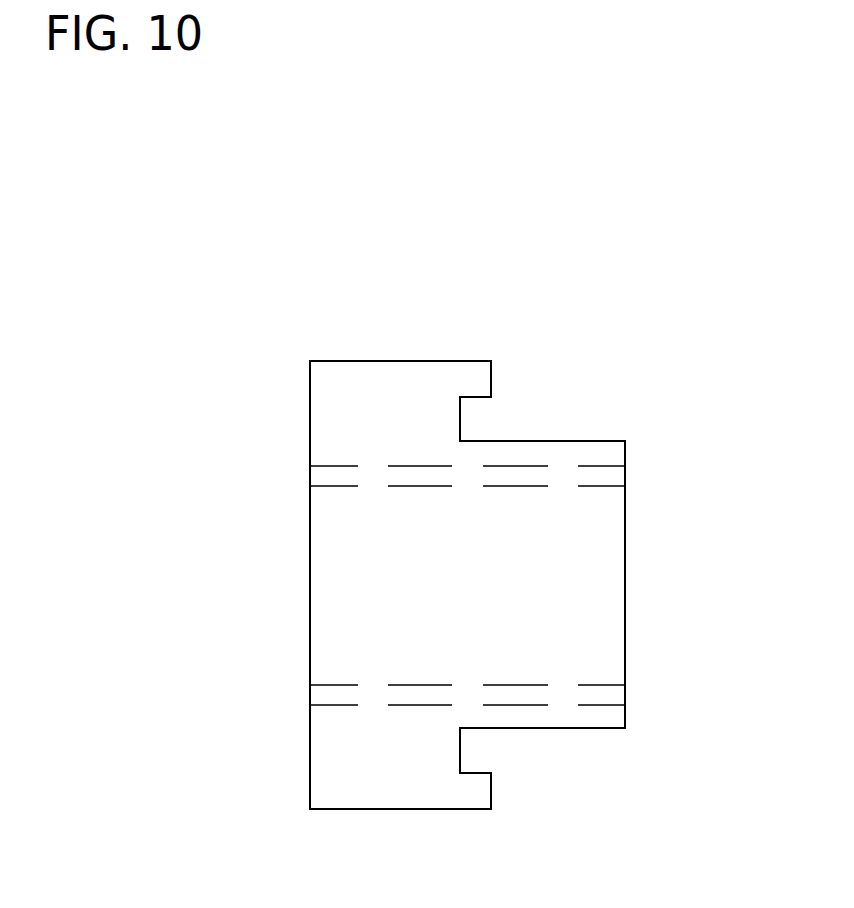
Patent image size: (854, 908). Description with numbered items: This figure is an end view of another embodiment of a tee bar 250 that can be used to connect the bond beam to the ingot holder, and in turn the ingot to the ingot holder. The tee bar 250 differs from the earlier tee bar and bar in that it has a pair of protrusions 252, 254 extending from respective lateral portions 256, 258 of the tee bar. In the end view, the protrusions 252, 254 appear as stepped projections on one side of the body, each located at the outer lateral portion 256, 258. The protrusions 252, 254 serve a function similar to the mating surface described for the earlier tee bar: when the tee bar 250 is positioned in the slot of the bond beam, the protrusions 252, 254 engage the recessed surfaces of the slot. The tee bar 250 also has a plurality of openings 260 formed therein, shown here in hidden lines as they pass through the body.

The tee bar 250 is at (613, 272).
The protrusion 252 is at (491, 790).
The protrusion 254 is at (491, 378).
The lateral portion 256 is at (402, 810).
The lateral portion 258 is at (374, 360).
The openings 260 is at (388, 584).